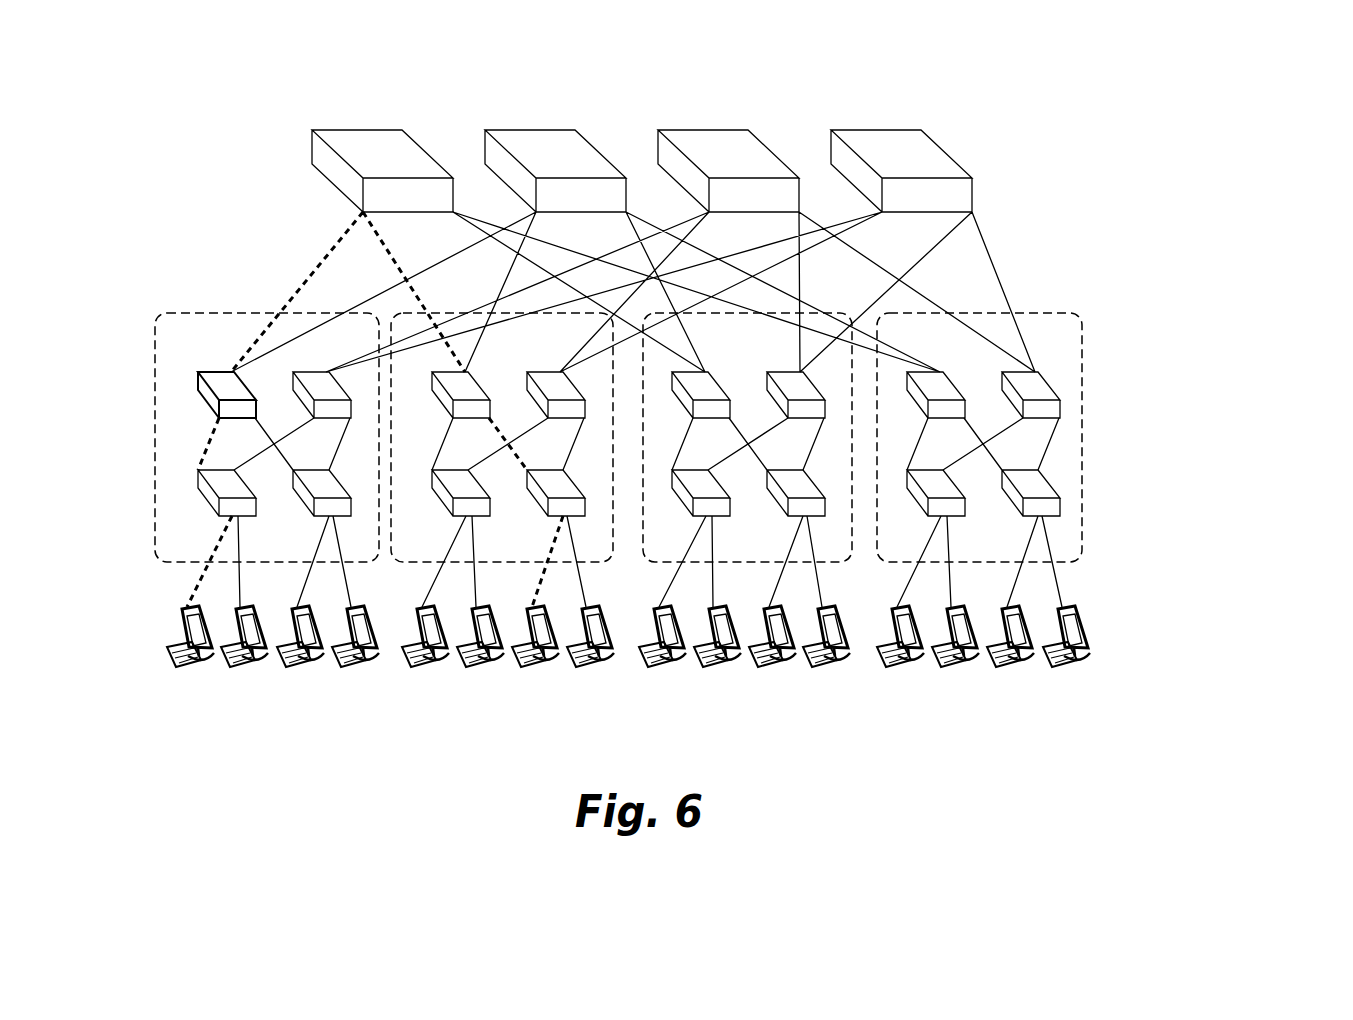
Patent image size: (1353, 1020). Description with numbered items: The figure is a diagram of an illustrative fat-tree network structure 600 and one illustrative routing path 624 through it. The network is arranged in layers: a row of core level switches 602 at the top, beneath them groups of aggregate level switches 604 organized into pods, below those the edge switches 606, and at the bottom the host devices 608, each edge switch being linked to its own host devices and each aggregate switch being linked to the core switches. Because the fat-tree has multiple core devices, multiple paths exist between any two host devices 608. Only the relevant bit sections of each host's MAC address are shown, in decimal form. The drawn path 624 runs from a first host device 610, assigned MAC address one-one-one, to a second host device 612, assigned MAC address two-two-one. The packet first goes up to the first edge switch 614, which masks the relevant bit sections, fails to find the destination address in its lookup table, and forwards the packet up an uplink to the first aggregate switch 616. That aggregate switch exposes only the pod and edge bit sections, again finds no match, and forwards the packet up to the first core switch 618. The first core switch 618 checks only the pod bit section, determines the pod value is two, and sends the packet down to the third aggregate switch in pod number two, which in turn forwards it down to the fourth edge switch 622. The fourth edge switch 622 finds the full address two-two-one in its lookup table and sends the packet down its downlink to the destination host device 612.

The fat-tree network structure 600 is at (201, 115).
The core level switch 602 is at (738, 197).
The aggregate level switch 604 is at (655, 367).
The edge switch 606 is at (681, 516).
The host device 608 is at (687, 650).
The first host device 610 is at (182, 636).
The second host device 612 is at (527, 666).
The edge 1 switch 614 is at (198, 490).
The aggregate 1 switch 616 is at (332, 366).
The core 1 switch 618 is at (325, 171).
The edge 4 switch 622 is at (585, 514).
The routing path 624 is at (735, 747).